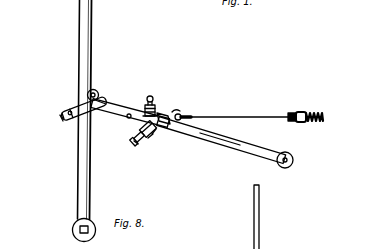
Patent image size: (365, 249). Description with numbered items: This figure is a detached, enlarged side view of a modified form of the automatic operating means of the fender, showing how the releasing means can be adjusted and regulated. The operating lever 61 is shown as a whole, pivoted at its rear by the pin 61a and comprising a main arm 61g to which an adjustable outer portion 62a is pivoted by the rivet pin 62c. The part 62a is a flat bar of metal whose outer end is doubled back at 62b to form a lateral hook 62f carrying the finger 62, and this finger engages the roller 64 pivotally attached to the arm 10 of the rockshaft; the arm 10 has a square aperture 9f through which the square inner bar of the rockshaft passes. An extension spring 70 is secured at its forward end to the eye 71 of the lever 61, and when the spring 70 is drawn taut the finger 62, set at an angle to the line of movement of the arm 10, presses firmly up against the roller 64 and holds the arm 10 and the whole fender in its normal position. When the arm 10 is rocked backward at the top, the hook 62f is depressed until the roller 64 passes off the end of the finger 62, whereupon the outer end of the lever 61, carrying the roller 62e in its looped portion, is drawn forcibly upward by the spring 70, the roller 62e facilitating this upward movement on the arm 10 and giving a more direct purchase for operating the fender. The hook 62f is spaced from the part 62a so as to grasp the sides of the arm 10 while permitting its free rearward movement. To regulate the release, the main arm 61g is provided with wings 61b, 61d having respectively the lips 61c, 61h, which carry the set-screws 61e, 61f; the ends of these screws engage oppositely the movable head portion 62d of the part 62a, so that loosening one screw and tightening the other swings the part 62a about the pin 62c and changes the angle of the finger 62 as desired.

The arm 10 is at (92, 13).
The aperture 9f is at (73, 228).
The roller 64 is at (89, 91).
The finger 62 is at (103, 99).
The adjustable outer portion 62a is at (107, 108).
The doubled-back outer end 62b is at (61, 119).
The rivet pin 62c is at (128, 119).
The movable head portion 62d is at (156, 132).
The roller 62e is at (60, 110).
The lateral hook 62f is at (79, 104).
The operating lever 61 is at (160, 110).
The pin 61a is at (294, 156).
The wing 61b is at (152, 136).
The lip 61c is at (156, 104).
The wing 61d is at (182, 108).
The set-screw 61e is at (150, 95).
The set-screw 61f is at (139, 143).
The main arm 61g is at (224, 150).
The lip 61h is at (151, 140).
The extension spring 70 is at (318, 111).
The eye 71 is at (190, 113).